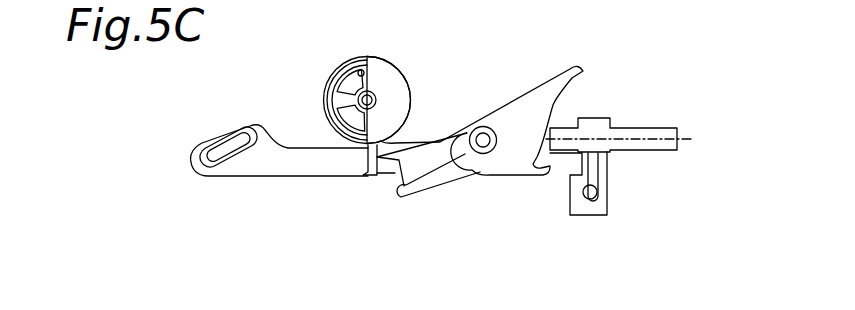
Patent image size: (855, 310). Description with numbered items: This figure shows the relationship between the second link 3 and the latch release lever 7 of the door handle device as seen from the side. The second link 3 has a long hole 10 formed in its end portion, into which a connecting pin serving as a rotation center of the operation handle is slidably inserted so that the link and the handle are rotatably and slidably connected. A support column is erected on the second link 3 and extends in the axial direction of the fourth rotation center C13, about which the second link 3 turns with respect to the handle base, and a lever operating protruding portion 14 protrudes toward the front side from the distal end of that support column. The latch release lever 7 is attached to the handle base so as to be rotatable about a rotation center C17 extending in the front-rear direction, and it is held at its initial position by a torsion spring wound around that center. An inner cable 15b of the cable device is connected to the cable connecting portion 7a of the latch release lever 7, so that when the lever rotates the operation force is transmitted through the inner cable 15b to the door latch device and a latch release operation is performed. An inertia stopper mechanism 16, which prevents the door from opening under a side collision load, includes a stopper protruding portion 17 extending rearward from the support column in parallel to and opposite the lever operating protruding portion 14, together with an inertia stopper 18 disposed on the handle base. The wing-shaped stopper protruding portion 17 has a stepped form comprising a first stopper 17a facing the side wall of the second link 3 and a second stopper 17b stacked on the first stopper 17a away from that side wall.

The second link 3 is at (302, 170).
The long hole 10 is at (221, 152).
The inertia stopper mechanism 16 is at (321, 67).
The inertia stopper 18 is at (398, 73).
The lever operating protruding portion 14 is at (538, 90).
The fourth rotation center C13 is at (483, 143).
The stopper protruding portion 17 is at (387, 178).
The first stopper 17a is at (390, 171).
The second stopper 17b is at (432, 185).
The latch release lever 7 is at (646, 116).
The rotation center C17 is at (690, 138).
The cable connecting portion 7a is at (606, 200).
The inner cable 15b is at (588, 200).